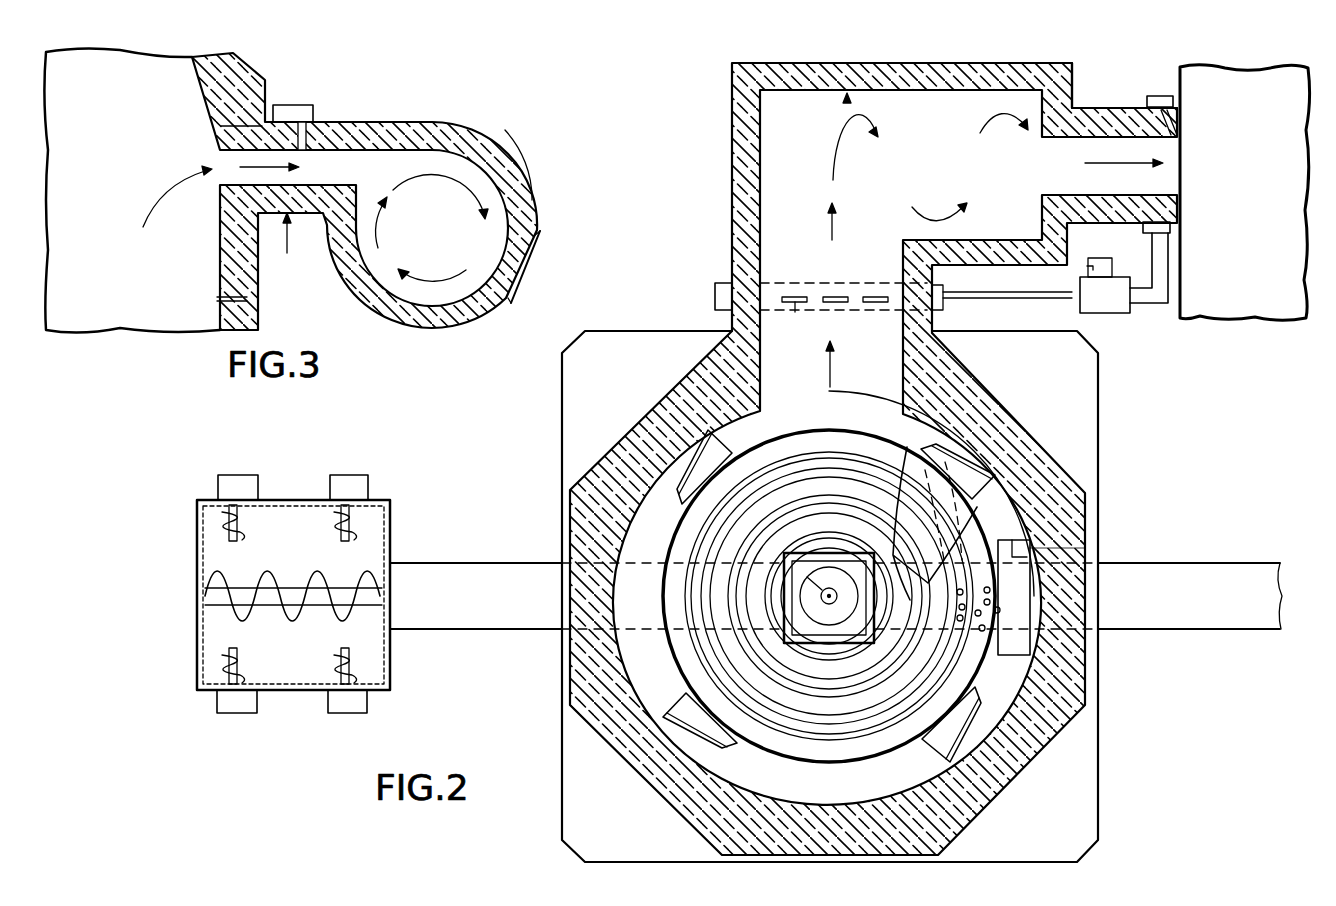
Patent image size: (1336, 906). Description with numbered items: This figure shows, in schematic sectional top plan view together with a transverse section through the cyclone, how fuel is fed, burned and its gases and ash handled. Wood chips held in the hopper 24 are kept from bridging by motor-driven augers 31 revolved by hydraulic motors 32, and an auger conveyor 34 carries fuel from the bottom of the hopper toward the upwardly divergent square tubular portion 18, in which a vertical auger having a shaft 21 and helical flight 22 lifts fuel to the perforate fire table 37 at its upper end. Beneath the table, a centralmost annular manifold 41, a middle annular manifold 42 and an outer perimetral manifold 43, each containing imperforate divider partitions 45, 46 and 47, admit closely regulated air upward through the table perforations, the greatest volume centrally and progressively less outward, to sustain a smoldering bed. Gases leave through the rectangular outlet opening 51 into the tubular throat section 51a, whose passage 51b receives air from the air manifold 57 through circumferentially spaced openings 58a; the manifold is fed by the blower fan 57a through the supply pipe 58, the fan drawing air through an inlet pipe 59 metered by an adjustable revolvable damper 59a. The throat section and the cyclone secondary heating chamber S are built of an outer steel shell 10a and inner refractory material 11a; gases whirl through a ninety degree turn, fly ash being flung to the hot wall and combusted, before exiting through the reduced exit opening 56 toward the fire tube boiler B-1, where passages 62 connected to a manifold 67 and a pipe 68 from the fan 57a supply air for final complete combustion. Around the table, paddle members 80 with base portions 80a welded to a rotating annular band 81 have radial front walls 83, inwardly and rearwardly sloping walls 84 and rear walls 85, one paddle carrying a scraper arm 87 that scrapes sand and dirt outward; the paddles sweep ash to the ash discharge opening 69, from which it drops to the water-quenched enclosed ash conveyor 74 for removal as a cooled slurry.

In FIG. 3, the outer steel shell 10a is at (512, 300).
In FIG. 3, the inner refractory material 11a is at (515, 185).
In FIG. 3, the cyclone secondary heating chamber S is at (512, 145).
In FIG. 2, the cyclone secondary heating chamber S is at (845, 98).
In FIG. 3, the air manifold 57 is at (313, 112).
In FIG. 2, the air manifold 57 is at (714, 297).
In FIG. 3, the passage 51b is at (305, 160).
In FIG. 2, the passage 51b is at (855, 274).
In FIG. 3, the circumferentially spaced openings 58a is at (216, 133).
In FIG. 2, the circumferentially spaced openings 58a is at (822, 304).
In FIG. 3, the tubular throat section 51a is at (287, 240).
In FIG. 2, the tubular throat section 51a is at (762, 280).
In FIG. 2, the fire table 37 is at (975, 395).
In FIG. 2, the outlet opening 51 is at (903, 393).
In FIG. 2, the supply pipe 58 is at (1002, 297).
In FIG. 2, the blower fan 57a is at (1112, 307).
In FIG. 2, the inlet pipe 59 is at (1100, 258).
In FIG. 2, the damper 59a is at (1087, 269).
In FIG. 2, the pipe 68 is at (1152, 268).
In FIG. 2, the manifold 67 is at (1160, 97).
In FIG. 2, the passages 62 is at (1150, 124).
In FIG. 2, the exit opening 56 is at (1086, 134).
In FIG. 2, the fire tube boiler B-1 is at (1264, 317).
In FIG. 2, the ash conveyor 74 is at (1200, 629).
In FIG. 2, the annular band 81 is at (662, 640).
In FIG. 2, the sloping wall 84 is at (985, 470).
In FIG. 2, the middle annular manifold 42 is at (767, 687).
In FIG. 2, the outer perimetral manifold 43 is at (775, 673).
In FIG. 2, the divider partition 45 is at (893, 660).
In FIG. 2, the divider partition 46 is at (877, 647).
In FIG. 2, the divider partition 47 is at (847, 667).
In FIG. 2, the centralmost annular manifold 41 is at (822, 650).
In FIG. 2, the tubular portion 18 is at (787, 590).
In FIG. 2, the shaft 21 is at (795, 603).
In FIG. 2, the helical flight 22 is at (833, 594).
In FIG. 2, the paddle members 80 is at (735, 440).
In FIG. 2, the base portions 80a is at (745, 446).
In FIG. 2, the rear wall 85 is at (907, 450).
In FIG. 2, the front wall 83 is at (988, 498).
In FIG. 2, the ash discharge opening 69 is at (1030, 545).
In FIG. 2, the scraper arm 87 is at (1024, 544).
In FIG. 2, the hopper 24 is at (387, 650).
In FIG. 2, the hydraulic motors 32 is at (331, 489).
In FIG. 2, the motor-driven augers 31 is at (378, 515).
In FIG. 2, the auger conveyor 34 is at (287, 585).